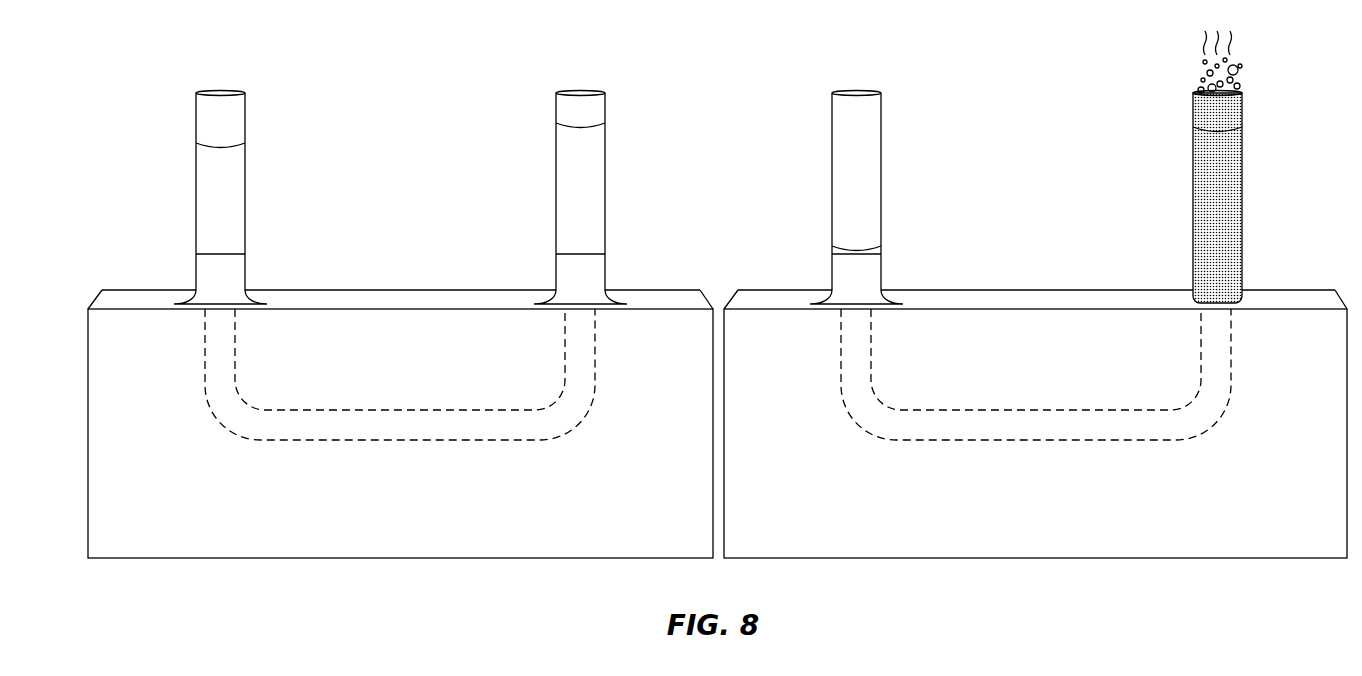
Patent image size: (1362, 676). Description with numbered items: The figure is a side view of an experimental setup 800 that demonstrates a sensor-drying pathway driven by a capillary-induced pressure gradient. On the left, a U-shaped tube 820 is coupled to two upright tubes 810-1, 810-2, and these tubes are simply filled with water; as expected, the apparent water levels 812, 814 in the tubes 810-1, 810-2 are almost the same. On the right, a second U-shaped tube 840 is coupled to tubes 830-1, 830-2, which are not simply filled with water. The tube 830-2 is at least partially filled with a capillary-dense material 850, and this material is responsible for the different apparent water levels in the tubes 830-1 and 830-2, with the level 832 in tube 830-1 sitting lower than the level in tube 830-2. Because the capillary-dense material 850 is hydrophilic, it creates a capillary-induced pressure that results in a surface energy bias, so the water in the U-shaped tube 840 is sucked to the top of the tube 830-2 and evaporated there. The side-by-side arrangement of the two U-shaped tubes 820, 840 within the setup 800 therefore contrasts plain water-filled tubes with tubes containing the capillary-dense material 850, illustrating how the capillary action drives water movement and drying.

The experimental setup 800 is at (178, 43).
The tube 810-1 is at (263, 198).
The tube 810-2 is at (624, 198).
The liquid level in first tube 812 is at (246, 144).
The liquid level in second tube 814 is at (606, 124).
The U-shaped tube 820 is at (394, 410).
The tube 830-1 is at (867, 198).
The tube 830-2 is at (1235, 167).
The liquid level in first tube 832 is at (830, 246).
The U-shaped tube 840 is at (1046, 410).
The capillary-dense material 850 is at (1192, 130).